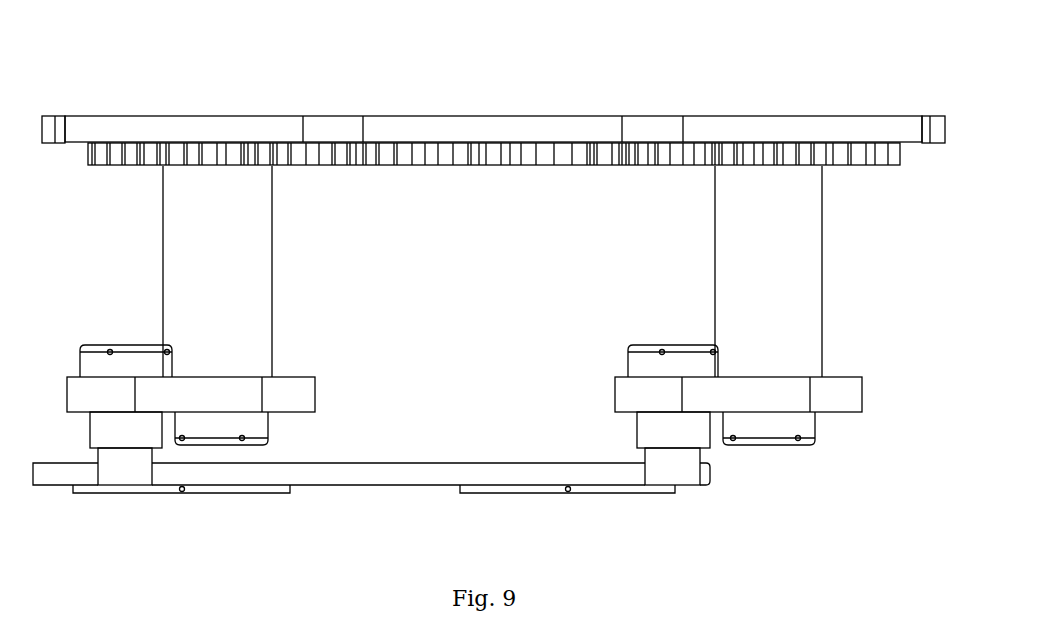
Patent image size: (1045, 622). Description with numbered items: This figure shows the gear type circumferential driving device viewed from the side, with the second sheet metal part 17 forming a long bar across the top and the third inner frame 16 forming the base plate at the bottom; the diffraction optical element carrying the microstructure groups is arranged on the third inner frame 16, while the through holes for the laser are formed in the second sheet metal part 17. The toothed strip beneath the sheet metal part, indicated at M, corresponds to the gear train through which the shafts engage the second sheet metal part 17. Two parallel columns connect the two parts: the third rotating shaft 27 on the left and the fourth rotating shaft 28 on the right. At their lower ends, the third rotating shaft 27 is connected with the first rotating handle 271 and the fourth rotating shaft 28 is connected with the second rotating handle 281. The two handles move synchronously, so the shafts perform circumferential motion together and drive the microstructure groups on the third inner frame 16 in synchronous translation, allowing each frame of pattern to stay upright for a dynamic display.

The second sheet metal part 17 is at (122, 116).
The rack/toothed module M is at (767, 116).
The third rotating shaft 27 is at (163, 233).
The fourth rotating shaft 28 is at (715, 222).
The first rotating handle 271 is at (77, 390).
The second rotating handle 281 is at (848, 394).
The third inner frame 16 is at (397, 473).